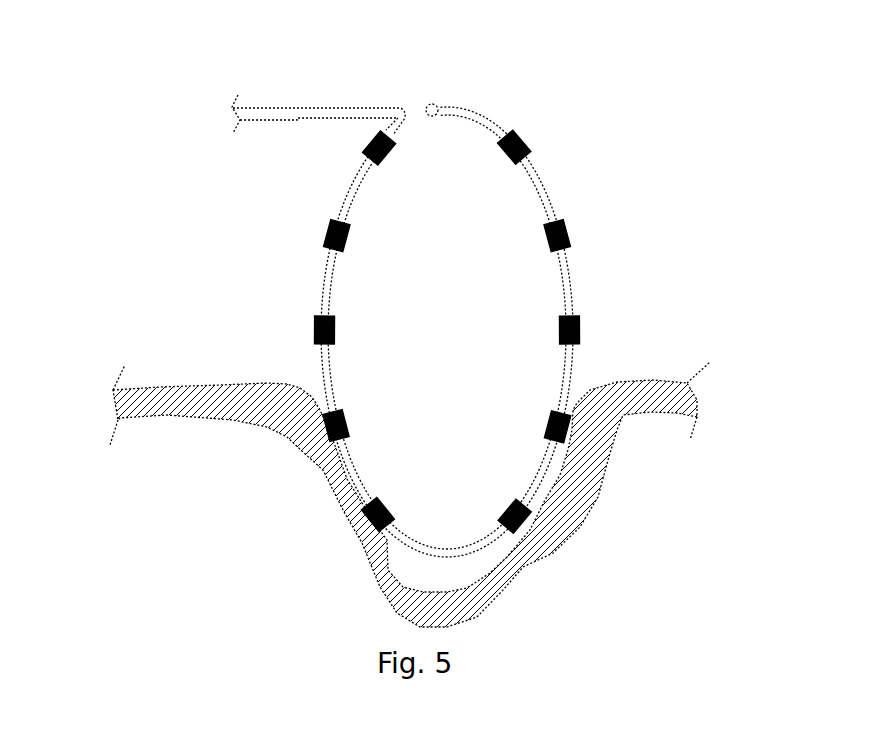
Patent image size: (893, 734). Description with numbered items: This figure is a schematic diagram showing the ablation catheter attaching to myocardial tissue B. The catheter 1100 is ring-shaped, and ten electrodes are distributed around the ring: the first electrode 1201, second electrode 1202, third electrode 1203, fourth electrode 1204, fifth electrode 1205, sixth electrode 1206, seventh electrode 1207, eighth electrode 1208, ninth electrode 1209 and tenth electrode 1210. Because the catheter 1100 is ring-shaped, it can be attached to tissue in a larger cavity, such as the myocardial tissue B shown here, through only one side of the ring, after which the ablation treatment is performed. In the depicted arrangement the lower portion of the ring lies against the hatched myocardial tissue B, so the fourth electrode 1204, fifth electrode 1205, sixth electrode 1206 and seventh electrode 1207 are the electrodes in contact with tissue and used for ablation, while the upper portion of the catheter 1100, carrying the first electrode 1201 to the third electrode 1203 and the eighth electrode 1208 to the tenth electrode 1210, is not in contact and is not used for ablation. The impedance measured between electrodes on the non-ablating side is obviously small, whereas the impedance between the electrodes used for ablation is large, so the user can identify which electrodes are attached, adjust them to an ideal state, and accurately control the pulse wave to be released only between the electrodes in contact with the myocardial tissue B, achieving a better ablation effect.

The catheter 1100 is at (462, 110).
The first electrode 1201 is at (525, 140).
The second electrode 1202 is at (570, 232).
The third electrode 1203 is at (582, 318).
The fourth electrode 1204 is at (573, 422).
The fifth electrode 1205 is at (523, 523).
The sixth electrode 1206 is at (370, 523).
The seventh electrode 1207 is at (305, 452).
The eighth electrode 1208 is at (312, 330).
The ninth electrode 1209 is at (323, 233).
The tenth electrode 1210 is at (360, 150).
The myocardial tissue B is at (243, 410).